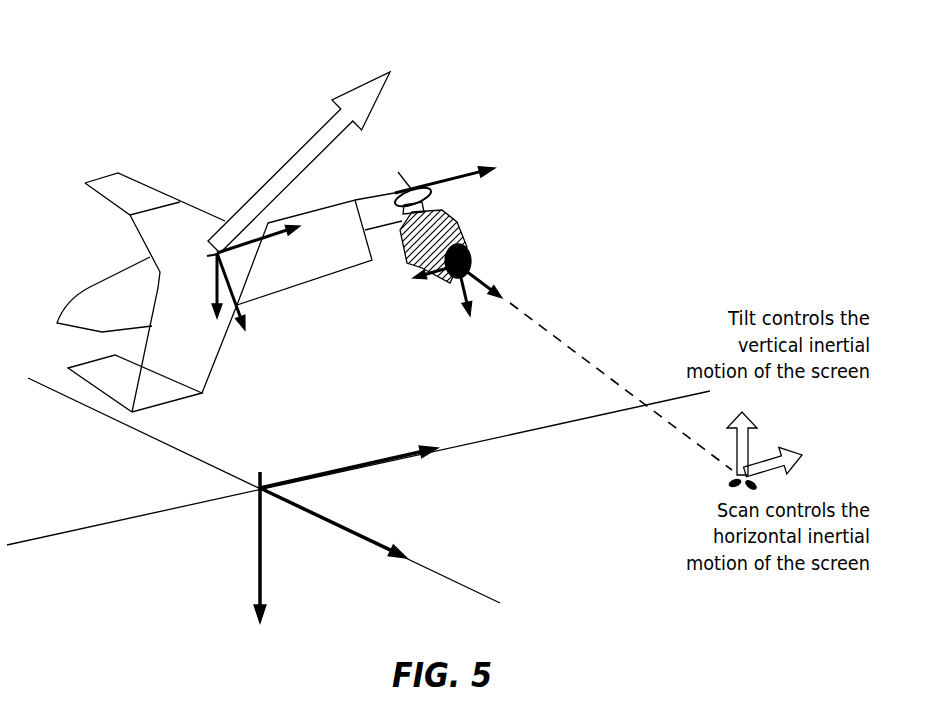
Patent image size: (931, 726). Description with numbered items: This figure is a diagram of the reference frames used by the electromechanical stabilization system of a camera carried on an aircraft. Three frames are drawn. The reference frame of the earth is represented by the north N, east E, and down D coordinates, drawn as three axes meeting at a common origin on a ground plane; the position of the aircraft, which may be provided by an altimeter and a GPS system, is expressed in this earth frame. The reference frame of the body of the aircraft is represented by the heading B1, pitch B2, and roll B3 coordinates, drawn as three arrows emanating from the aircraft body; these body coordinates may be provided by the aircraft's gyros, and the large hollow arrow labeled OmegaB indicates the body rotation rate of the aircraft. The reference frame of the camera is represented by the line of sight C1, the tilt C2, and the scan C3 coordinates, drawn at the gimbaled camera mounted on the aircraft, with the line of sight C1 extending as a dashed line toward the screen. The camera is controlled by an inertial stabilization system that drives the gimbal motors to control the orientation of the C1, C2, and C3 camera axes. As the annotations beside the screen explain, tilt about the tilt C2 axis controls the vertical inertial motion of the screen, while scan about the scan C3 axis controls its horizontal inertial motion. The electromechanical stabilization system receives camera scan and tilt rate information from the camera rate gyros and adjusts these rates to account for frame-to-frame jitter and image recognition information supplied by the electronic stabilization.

The body angular rate vector Omega^B OmegaB is at (326, 152).
The heading coordinate B1 is at (275, 232).
The pitch coordinate B2 is at (209, 301).
The roll coordinate B3 is at (243, 309).
The line of sight coordinate C1 is at (595, 367).
The tilt coordinate C2 is at (392, 239).
The scan coordinate C3 is at (512, 318).
The north coordinate N is at (363, 455).
The east coordinate E is at (340, 523).
The down coordinate D is at (277, 547).